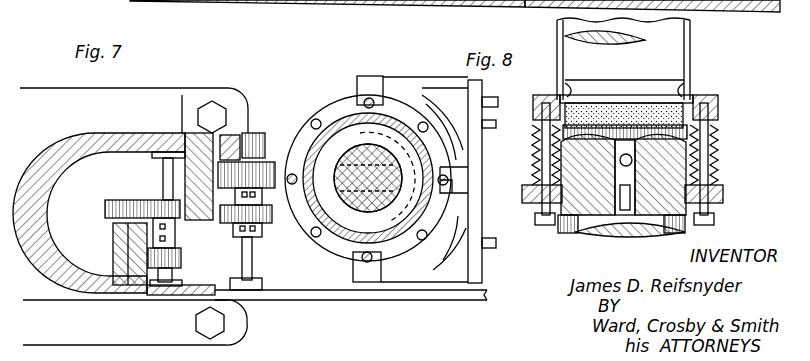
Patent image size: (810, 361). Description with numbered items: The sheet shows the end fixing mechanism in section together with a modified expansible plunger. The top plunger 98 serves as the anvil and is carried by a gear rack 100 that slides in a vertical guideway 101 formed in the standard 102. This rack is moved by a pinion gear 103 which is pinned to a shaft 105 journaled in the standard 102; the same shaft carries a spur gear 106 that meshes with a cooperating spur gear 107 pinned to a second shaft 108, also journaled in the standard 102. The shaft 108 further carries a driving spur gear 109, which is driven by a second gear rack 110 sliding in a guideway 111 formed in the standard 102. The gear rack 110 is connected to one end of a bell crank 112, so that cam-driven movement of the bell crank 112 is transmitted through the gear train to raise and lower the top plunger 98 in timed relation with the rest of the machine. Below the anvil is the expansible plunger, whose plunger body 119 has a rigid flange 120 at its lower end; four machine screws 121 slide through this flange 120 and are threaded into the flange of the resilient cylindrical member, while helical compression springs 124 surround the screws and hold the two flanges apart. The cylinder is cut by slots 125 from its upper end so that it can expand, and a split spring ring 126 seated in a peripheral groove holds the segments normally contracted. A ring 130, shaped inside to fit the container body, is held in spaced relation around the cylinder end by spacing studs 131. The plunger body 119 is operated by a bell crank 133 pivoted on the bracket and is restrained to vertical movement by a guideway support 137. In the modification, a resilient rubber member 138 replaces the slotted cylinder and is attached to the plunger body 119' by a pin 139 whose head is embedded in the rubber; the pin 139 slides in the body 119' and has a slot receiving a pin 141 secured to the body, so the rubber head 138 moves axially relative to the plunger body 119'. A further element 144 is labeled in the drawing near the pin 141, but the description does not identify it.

In FIG. 8, the top plunger 98 is at (672, 53).
In FIG. 7, the gear rack 100 is at (246, 112).
In FIG. 7, the vertical guideway 101 is at (207, 85).
In FIG. 7, the standard 102 is at (97, 143).
In FIG. 7, the pinion gear 103 is at (277, 165).
In FIG. 7, the shaft 105 is at (255, 133).
In FIG. 7, the spur gear 106 is at (277, 220).
In FIG. 7, the spur gear 107 is at (120, 194).
In FIG. 7, the shaft 108 is at (163, 173).
In FIG. 7, the driving spur gear 109 is at (230, 266).
In FIG. 7, the gear rack 110 is at (110, 297).
In FIG. 7, the guideway 111 is at (122, 258).
In FIG. 7, the bell crank 112 is at (464, 331).
In FIG. 7, the plunger body 119 is at (357, 239).
In FIG. 8, the plunger body 119' is at (656, 167).
In FIG. 8, the flange 120 is at (776, 179).
In FIG. 8, the machine screws 121 is at (776, 105).
In FIG. 8, the helical compression springs 124 is at (781, 124).
In FIG. 7, the slots 125 is at (333, 124).
In FIG. 7, the split spring ring 126 is at (322, 127).
In FIG. 8, the ring 130 is at (758, 82).
In FIG. 7, the spacing studs 131 is at (420, 73).
In FIG. 7, the bell crank 133 is at (443, 97).
In FIG. 7, the guideway support 137 is at (538, 269).
In FIG. 8, the resilient rubber member 138 is at (748, 59).
In FIG. 8, the pin 139 is at (615, 205).
In FIG. 8, the pin 141 is at (620, 197).
In FIG. 8, the passage 144 is at (620, 157).